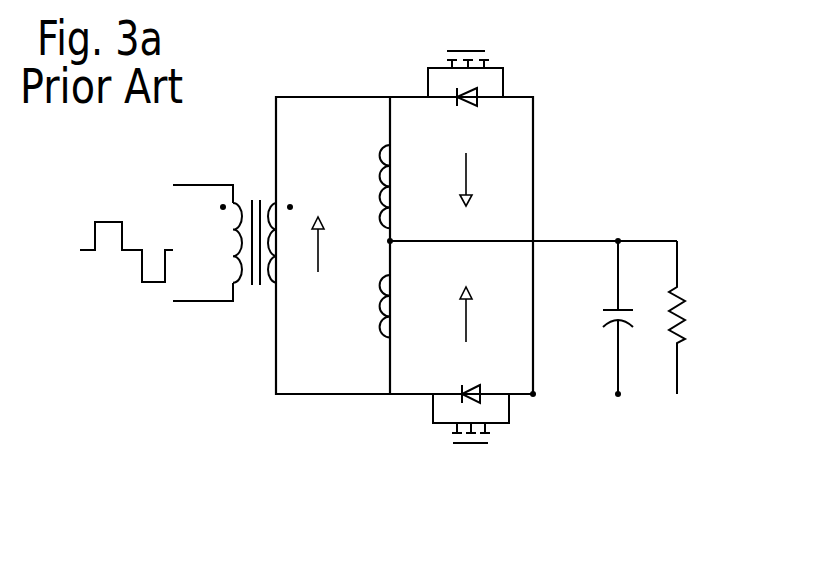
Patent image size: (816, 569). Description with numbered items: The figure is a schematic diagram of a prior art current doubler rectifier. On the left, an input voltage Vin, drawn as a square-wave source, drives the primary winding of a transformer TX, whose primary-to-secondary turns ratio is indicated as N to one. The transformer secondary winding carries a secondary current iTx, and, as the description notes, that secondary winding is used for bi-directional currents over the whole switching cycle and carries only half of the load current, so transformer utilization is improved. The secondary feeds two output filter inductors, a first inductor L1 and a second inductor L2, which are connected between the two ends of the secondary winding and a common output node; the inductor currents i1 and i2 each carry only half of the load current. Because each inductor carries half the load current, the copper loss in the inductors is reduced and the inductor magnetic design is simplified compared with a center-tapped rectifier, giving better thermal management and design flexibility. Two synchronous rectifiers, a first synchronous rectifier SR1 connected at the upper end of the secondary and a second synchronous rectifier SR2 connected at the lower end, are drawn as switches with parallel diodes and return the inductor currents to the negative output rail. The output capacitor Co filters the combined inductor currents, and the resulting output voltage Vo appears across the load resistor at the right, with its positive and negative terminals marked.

The input voltage source Vin is at (111, 244).
The transformer TX is at (233, 228).
The transformer turns ratio (primary N turns) N is at (259, 248).
The transformer secondary current iTx is at (336, 244).
The first output inductor L1 is at (413, 186).
The first inductor current i1 is at (484, 179).
The second output inductor L2 is at (412, 306).
The second inductor current i2 is at (482, 314).
The first synchronous rectifier SR1 is at (465, 60).
The second synchronous rectifier SR2 is at (471, 434).
The output capacitor Co is at (604, 317).
The output voltage / load Vo is at (699, 317).